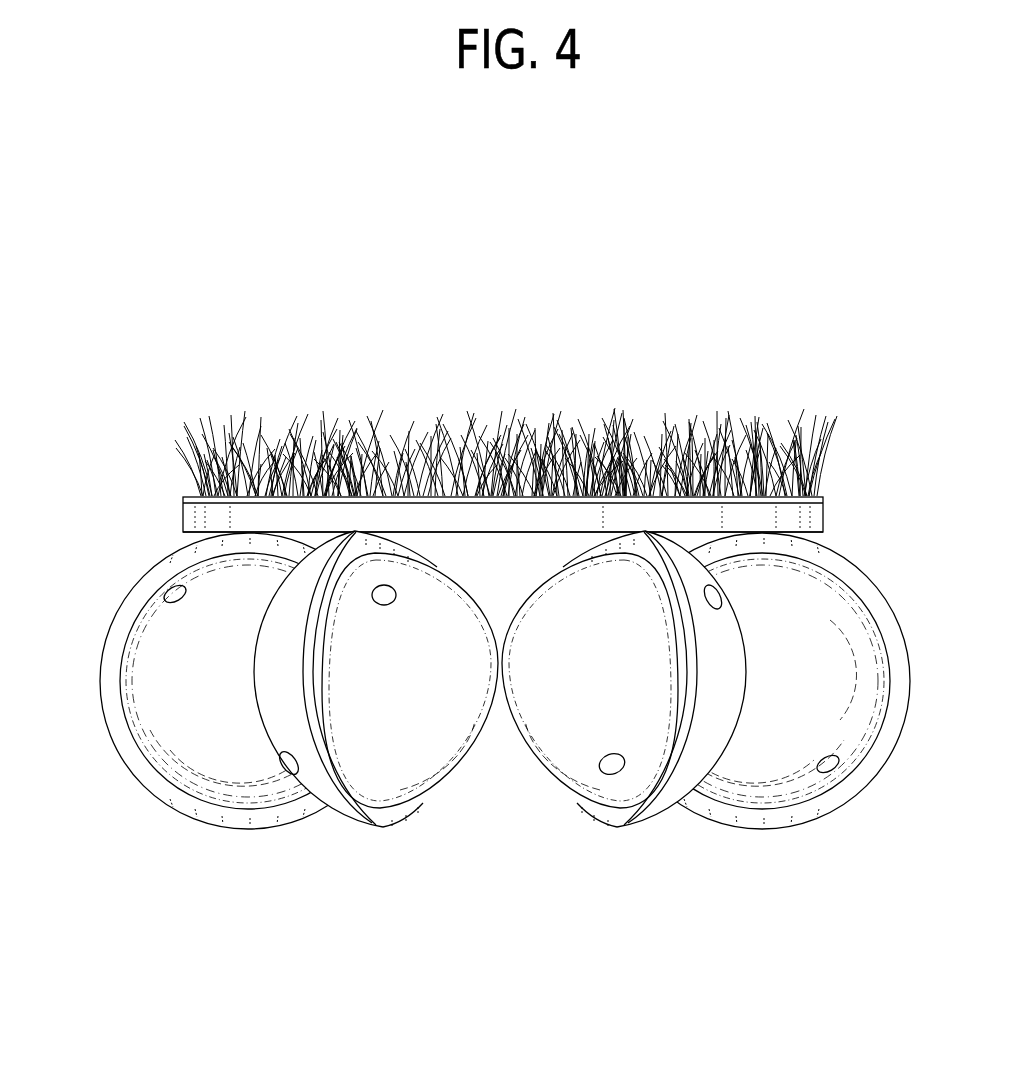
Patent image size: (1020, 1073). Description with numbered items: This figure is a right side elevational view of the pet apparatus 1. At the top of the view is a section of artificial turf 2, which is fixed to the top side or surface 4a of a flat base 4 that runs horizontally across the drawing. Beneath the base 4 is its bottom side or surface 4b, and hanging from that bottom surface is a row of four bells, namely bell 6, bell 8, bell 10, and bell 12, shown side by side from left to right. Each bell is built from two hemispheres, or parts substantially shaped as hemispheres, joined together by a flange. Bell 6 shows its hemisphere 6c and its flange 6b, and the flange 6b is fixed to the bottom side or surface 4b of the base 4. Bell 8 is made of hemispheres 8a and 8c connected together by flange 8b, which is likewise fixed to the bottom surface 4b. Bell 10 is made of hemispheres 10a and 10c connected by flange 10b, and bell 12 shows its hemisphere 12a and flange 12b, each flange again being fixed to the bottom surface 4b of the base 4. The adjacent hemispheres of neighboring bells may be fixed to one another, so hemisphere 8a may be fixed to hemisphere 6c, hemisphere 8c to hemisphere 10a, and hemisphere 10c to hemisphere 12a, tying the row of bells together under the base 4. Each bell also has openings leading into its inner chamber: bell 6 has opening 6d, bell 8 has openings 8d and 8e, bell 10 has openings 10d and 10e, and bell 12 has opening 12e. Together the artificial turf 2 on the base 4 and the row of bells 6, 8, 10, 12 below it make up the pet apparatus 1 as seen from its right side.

The pet apparatus 1 is at (474, 547).
The section of artificial turf 2 is at (430, 455).
The base 4 is at (448, 457).
The top side or surface 4a is at (193, 495).
The bottom side or surface 4b is at (440, 532).
The bell 6 is at (217, 681).
The flange 6b is at (107, 673).
The hemisphere 6c is at (233, 627).
The opening 6d is at (180, 599).
The bell 8 is at (376, 706).
The hemisphere 8a is at (293, 658).
The flange 8b is at (348, 813).
The hemisphere 8c is at (386, 675).
The opening 8d is at (396, 596).
The opening 8e is at (292, 756).
The bell 10 is at (625, 708).
The hemisphere 10a is at (644, 635).
The flange 10b is at (618, 820).
The hemisphere 10c is at (748, 701).
The opening 10d is at (715, 609).
The opening 10e is at (603, 756).
The bell 12 is at (762, 707).
The hemisphere 12a is at (810, 613).
The flange 12b is at (730, 813).
The opening 12e is at (826, 757).